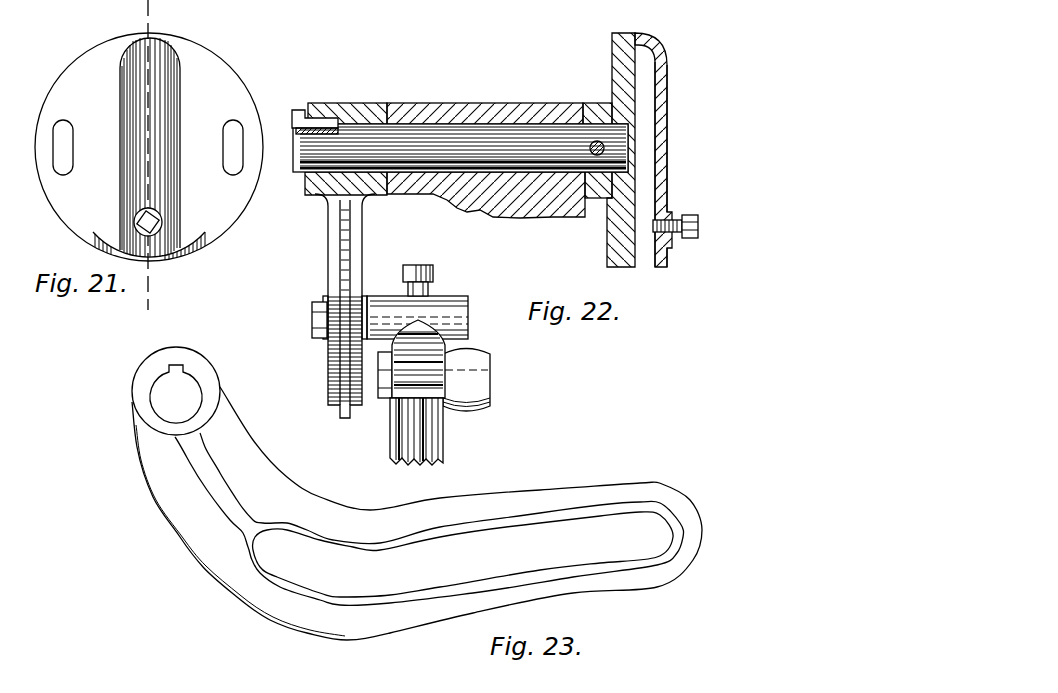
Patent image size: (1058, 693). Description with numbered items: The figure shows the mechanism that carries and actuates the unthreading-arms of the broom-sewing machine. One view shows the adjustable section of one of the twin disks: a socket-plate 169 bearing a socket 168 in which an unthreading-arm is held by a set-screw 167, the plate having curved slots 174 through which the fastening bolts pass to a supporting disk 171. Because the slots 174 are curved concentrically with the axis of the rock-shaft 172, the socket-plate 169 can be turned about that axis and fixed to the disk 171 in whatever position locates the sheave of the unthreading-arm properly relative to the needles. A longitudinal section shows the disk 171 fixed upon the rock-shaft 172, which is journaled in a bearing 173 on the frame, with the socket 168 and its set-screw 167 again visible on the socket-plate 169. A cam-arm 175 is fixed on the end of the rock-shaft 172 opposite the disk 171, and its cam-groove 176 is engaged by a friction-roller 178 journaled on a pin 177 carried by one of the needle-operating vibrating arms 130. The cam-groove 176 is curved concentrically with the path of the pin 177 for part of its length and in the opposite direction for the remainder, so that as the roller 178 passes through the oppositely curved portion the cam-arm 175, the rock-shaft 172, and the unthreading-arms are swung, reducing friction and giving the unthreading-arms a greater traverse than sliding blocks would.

In FIG. 22, the vibrating arm 130 is at (434, 392).
In FIG. 21, the set-screw 167 is at (134, 219).
In FIG. 22, the set-screw 167 is at (691, 231).
In FIG. 21, the socket 168 is at (150, 147).
In FIG. 22, the socket 168 is at (677, 164).
In FIG. 21, the socket-plate 169 is at (134, 147).
In FIG. 22, the socket-plate 169 is at (655, 42).
In FIG. 22, the disk 171 is at (608, 150).
In FIG. 22, the rock-shaft 172 is at (460, 141).
In FIG. 22, the bearing 173 is at (458, 151).
In FIG. 21, the slot 174 is at (148, 147).
In FIG. 22, the cam-arm 175 is at (336, 306).
In FIG. 23, the cam-arm 175 is at (417, 493).
In FIG. 23, the cam-groove 176 is at (429, 519).
In FIG. 22, the pin 177 is at (312, 320).
In FIG. 22, the friction-roller 178 is at (383, 302).